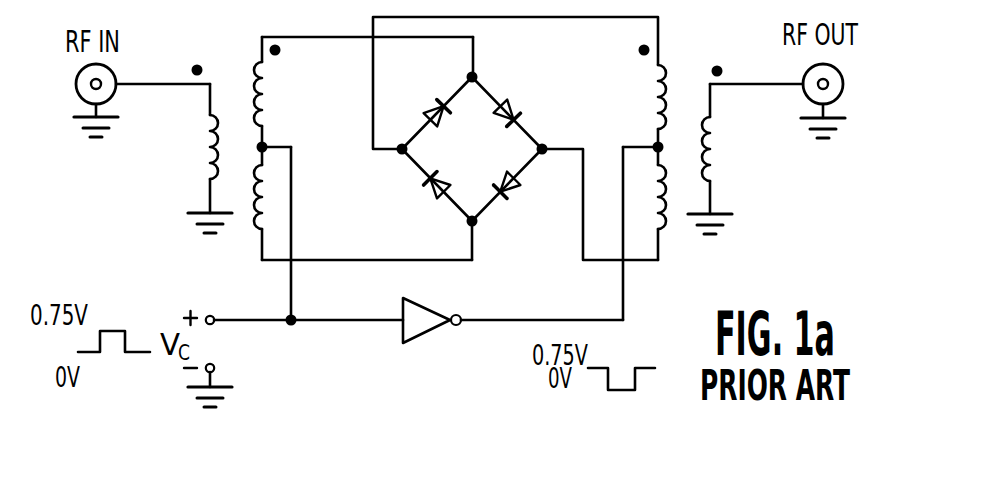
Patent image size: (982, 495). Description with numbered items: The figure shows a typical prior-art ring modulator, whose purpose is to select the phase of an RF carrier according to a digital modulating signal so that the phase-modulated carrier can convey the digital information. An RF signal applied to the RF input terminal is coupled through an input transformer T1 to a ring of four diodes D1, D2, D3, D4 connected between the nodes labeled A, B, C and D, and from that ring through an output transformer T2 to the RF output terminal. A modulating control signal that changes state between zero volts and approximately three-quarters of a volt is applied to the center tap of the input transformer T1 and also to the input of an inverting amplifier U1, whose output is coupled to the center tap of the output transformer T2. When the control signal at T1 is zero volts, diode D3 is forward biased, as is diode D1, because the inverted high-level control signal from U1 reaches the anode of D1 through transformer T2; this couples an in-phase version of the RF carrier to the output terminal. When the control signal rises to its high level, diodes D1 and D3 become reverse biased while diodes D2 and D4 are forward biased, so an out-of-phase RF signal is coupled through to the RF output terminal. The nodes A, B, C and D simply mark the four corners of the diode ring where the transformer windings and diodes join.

The input transformer T1 is at (241, 53).
The output transformer T2 is at (697, 58).
The diode D1 is at (427, 103).
The diode D2 is at (521, 103).
The diode D3 is at (521, 198).
The diode D4 is at (425, 198).
The inverting amplifier U1 is at (432, 306).
The bridge node A is at (402, 146).
The bridge node B is at (474, 75).
The bridge node C is at (545, 147).
The bridge node D is at (475, 224).